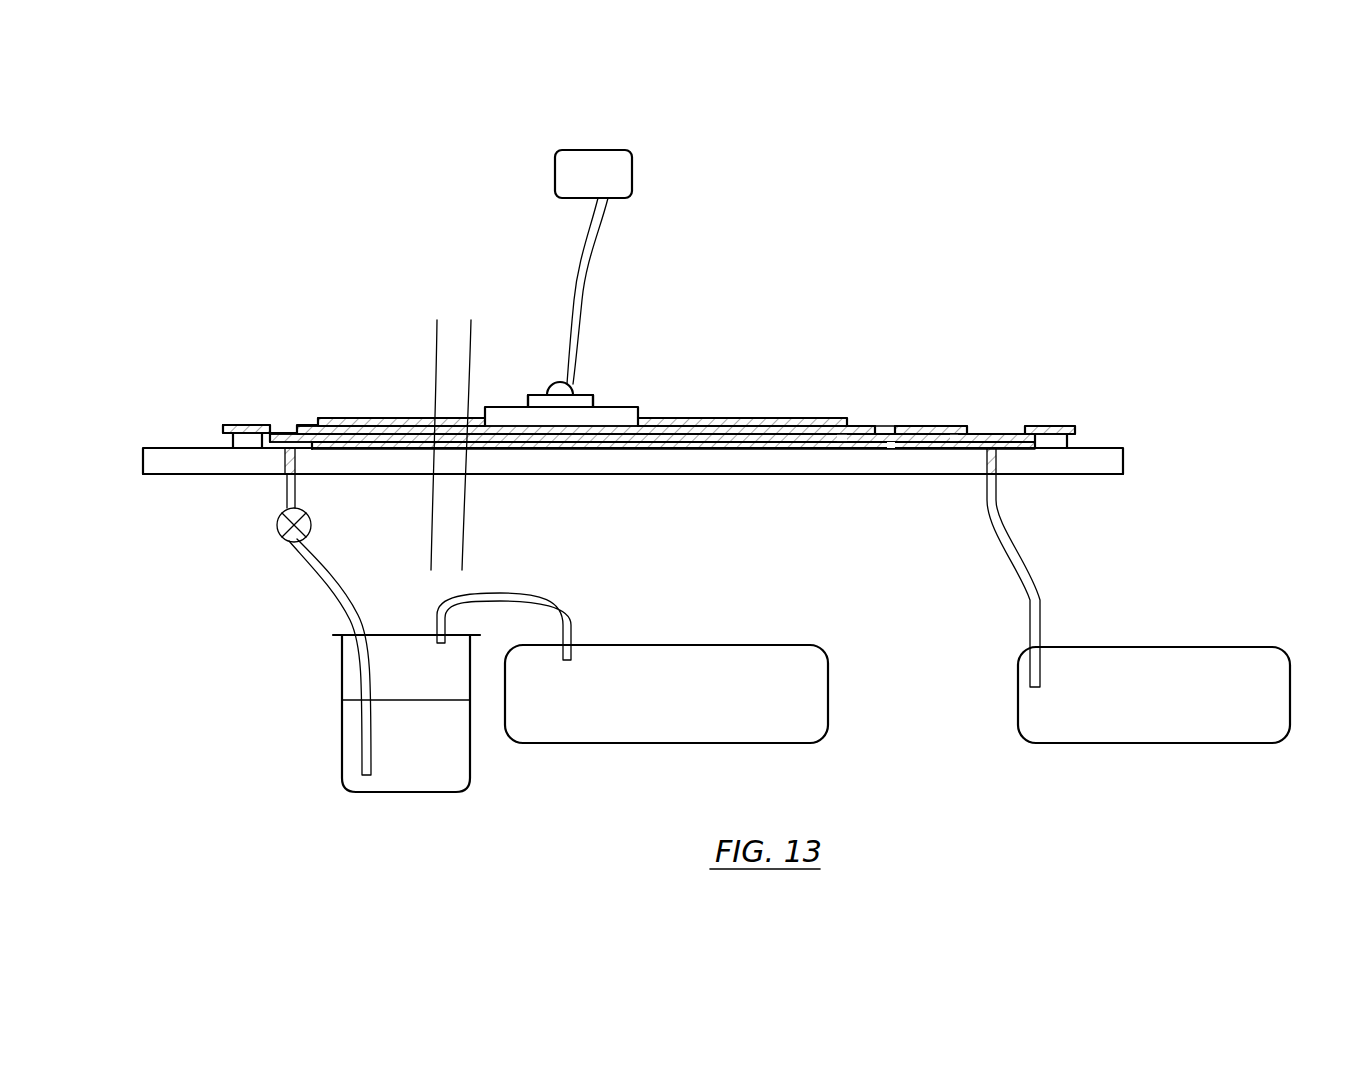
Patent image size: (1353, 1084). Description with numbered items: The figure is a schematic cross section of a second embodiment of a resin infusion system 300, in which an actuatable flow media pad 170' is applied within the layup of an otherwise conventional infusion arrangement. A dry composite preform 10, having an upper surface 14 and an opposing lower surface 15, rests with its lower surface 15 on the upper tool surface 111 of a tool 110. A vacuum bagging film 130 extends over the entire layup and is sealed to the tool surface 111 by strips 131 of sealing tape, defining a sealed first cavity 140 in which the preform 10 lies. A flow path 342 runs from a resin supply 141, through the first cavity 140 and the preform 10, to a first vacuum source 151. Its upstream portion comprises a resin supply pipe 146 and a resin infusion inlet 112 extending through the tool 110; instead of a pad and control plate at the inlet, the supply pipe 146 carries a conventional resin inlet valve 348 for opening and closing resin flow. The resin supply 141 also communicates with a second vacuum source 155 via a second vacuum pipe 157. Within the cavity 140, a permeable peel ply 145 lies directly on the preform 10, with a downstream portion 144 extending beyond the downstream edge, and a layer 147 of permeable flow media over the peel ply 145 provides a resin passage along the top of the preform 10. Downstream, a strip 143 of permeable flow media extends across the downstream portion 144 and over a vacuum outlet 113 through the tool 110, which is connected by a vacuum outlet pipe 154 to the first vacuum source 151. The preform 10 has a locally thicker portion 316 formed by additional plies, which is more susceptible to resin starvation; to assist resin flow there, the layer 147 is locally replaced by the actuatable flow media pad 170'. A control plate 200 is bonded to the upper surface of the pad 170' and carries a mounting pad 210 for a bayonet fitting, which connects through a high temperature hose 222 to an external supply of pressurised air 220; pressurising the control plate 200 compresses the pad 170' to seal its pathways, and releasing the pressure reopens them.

The resin infusion system 300 is at (405, 243).
The external supply of pressurised air 220 is at (555, 163).
The high temperature hose 222 is at (600, 228).
The mounting pad 210 is at (537, 397).
The control plate 200 is at (512, 412).
The first cavity 140 is at (419, 413).
The vacuum bagging film 130 is at (345, 417).
The flow path 342 is at (302, 445).
The thicker portion 316 is at (620, 447).
The upper surface 14 is at (715, 437).
The layer of permeable flow media 147 is at (783, 428).
The permeable peel ply 145 is at (810, 441).
The upper tool surface 111 is at (1097, 448).
The strips of sealing tape 131 is at (247, 442).
The strip of permeable flow media 143 is at (1022, 445).
The vacuum outlet 113 is at (1000, 452).
The downstream portion of the peel ply 144 is at (888, 445).
The lower surface 15 is at (795, 450).
The composite preform 10 is at (723, 450).
The tool 110 is at (629, 460).
The actuatable flow media pad 170' is at (424, 491).
The resin infusion inlet 112 is at (287, 462).
The resin inlet valve 348 is at (290, 541).
The resin supply pipe 146 is at (325, 598).
The resin supply 141 is at (448, 768).
The second vacuum pipe 157 is at (523, 597).
The second vacuum source 155 is at (672, 718).
The first vacuum source 151 is at (1182, 718).
The vacuum outlet pipe 154 is at (1028, 618).